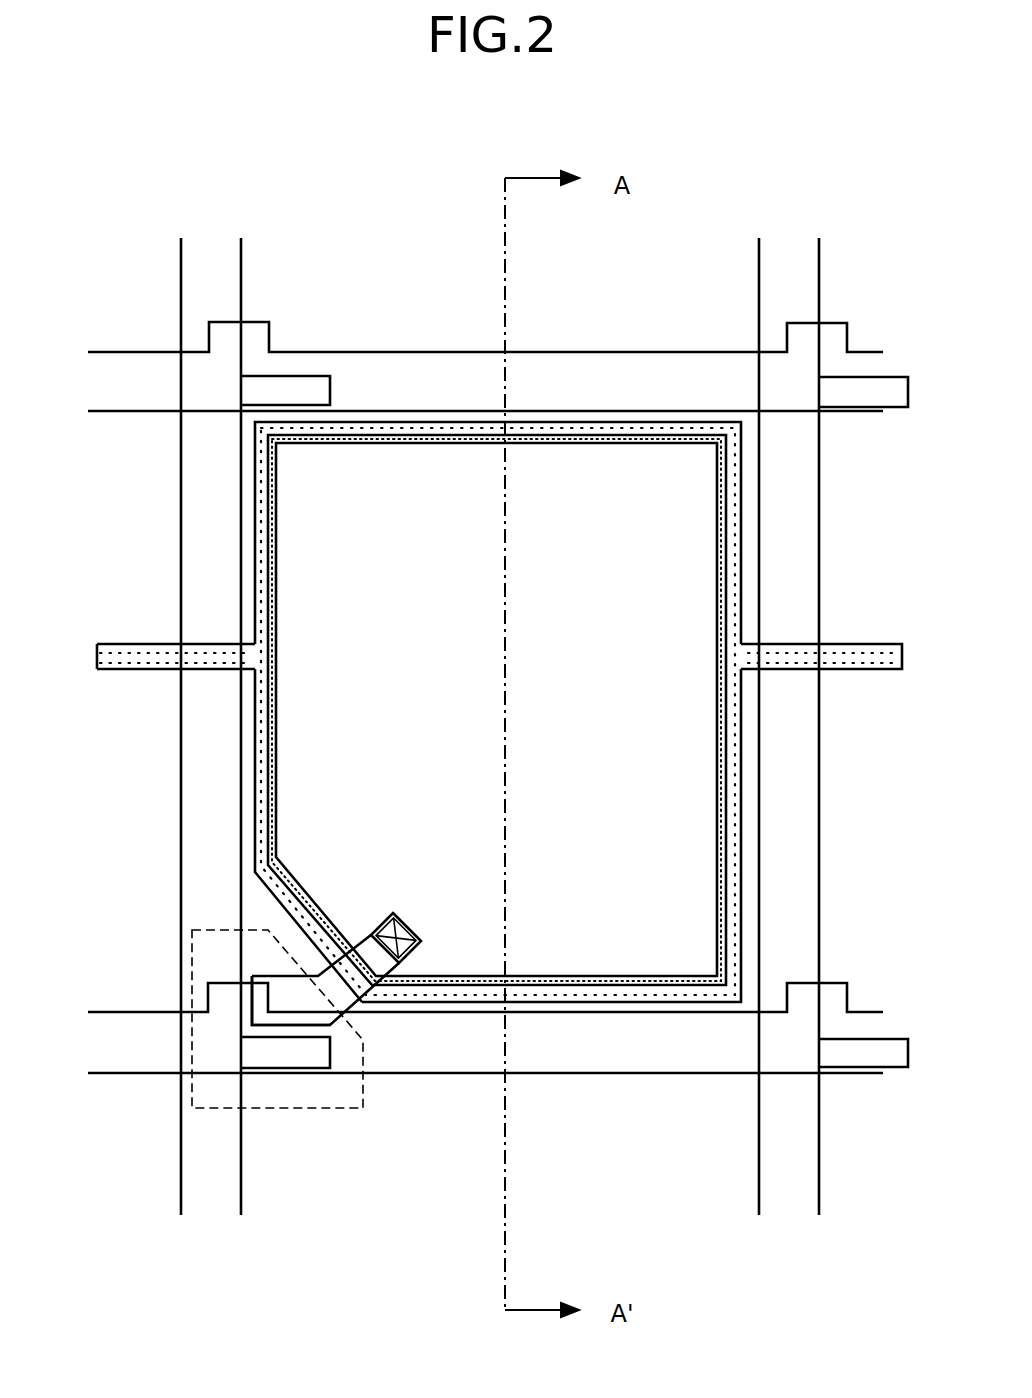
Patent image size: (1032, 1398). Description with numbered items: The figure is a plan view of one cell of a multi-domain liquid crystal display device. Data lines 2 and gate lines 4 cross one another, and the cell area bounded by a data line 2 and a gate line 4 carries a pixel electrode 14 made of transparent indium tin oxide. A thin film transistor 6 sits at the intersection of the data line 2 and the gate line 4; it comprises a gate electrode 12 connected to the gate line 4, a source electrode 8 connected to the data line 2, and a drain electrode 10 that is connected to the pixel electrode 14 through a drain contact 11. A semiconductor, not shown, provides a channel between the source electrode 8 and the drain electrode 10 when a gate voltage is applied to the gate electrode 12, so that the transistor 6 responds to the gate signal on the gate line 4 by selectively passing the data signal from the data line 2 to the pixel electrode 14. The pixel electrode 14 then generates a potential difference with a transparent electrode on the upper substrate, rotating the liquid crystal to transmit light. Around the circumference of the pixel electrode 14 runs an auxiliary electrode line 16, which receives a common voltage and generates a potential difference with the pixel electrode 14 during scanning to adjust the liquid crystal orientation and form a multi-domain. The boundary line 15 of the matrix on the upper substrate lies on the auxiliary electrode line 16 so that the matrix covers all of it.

The data line 2 is at (182, 782).
The gate line 4 is at (320, 367).
The thin film transistor 6 is at (228, 925).
The source electrode 8 is at (300, 1050).
The drain electrode 10 is at (347, 1003).
The drain contact 11 is at (413, 929).
The gate electrode 12 is at (230, 997).
The pixel electrode 14 is at (447, 583).
The boundary line of matrix 15 is at (727, 562).
The auxiliary electrode line 16 is at (268, 546).